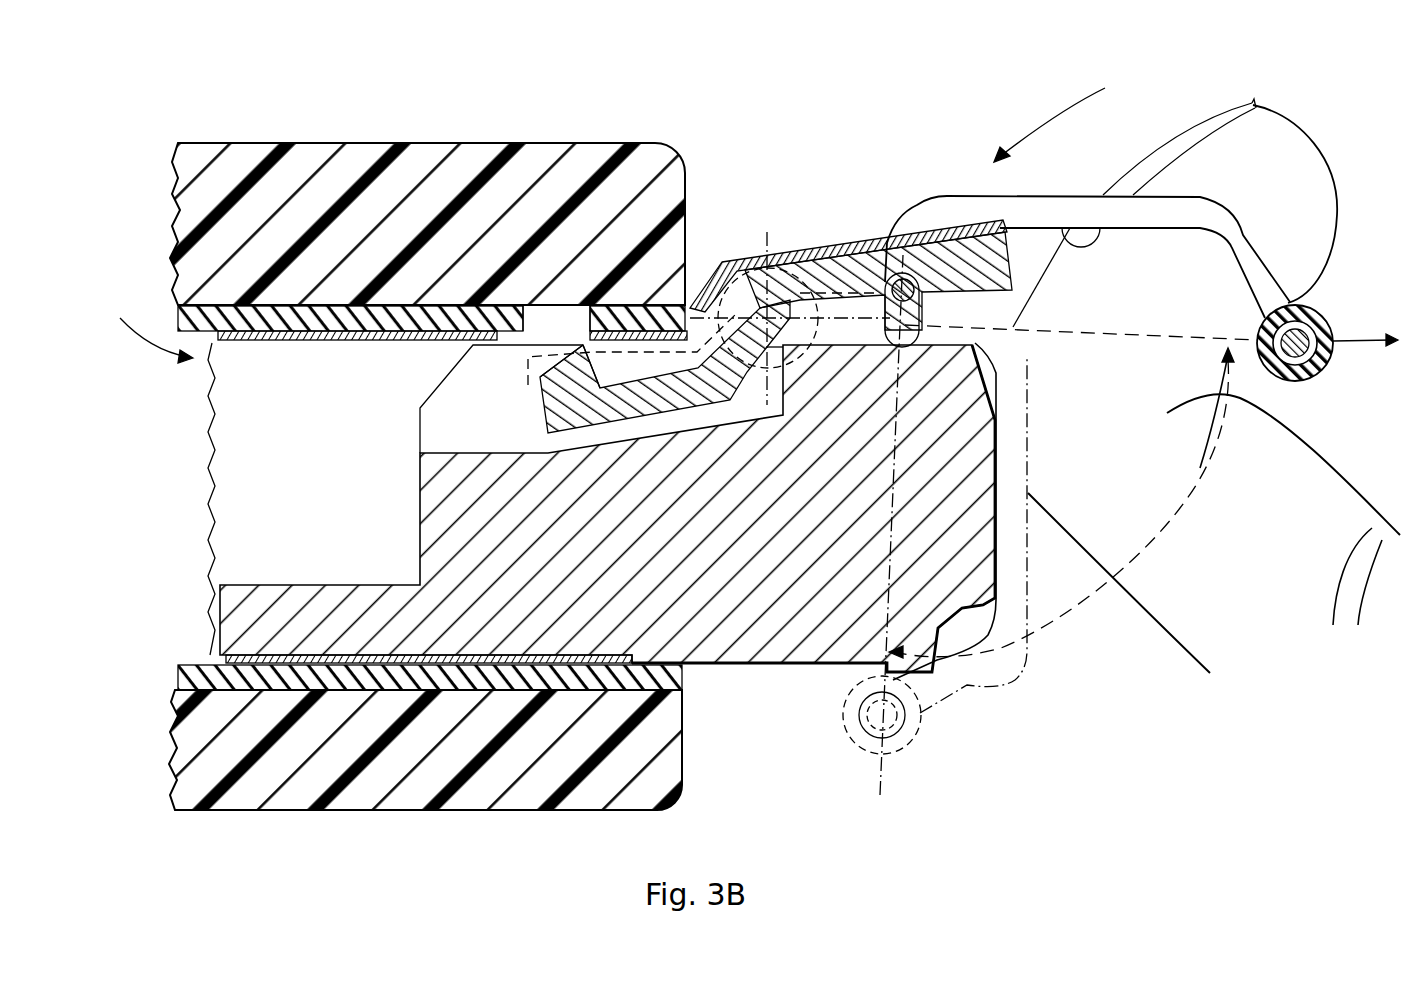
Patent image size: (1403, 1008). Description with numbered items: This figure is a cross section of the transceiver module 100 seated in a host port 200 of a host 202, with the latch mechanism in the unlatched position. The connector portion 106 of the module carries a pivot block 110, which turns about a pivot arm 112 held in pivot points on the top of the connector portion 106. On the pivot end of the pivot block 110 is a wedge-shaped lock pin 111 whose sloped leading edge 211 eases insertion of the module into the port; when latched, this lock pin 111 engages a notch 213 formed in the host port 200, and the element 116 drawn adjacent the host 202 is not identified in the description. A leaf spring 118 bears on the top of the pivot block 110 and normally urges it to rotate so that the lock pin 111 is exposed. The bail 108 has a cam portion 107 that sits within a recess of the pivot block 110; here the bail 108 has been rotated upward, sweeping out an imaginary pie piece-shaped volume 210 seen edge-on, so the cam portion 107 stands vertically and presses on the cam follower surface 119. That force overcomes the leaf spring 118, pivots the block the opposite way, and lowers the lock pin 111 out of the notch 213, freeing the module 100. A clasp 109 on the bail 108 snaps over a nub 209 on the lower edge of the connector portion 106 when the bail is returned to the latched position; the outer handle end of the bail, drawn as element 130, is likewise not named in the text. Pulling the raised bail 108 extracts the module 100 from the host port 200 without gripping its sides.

The transceiver module 100 is at (1070, 114).
The connector portion 106 is at (733, 637).
The cam portion 107 is at (947, 320).
The bail 108 is at (1066, 190).
The clasp 109 is at (1323, 370).
The pivot block 110 is at (1012, 262).
The lock pin 111 is at (568, 358).
The pivot arm 112 is at (755, 315).
The conductive layer 116 is at (298, 343).
The leaf spring 118 is at (813, 248).
The cam follower surface 119 is at (890, 287).
The handle 130 is at (1248, 232).
The host port 200 is at (144, 326).
The host 202 is at (228, 178).
The nub 209 is at (940, 662).
The pie piece-shaped volume 210 is at (1185, 495).
The leading edge 211 is at (570, 362).
The notch 213 is at (570, 317).